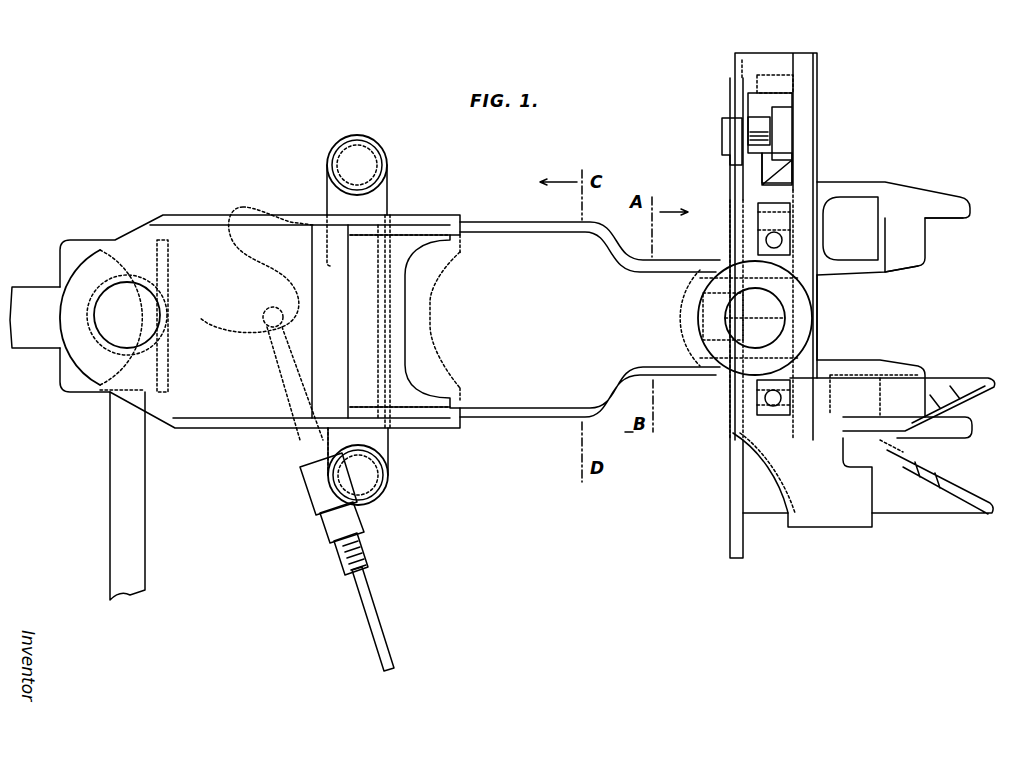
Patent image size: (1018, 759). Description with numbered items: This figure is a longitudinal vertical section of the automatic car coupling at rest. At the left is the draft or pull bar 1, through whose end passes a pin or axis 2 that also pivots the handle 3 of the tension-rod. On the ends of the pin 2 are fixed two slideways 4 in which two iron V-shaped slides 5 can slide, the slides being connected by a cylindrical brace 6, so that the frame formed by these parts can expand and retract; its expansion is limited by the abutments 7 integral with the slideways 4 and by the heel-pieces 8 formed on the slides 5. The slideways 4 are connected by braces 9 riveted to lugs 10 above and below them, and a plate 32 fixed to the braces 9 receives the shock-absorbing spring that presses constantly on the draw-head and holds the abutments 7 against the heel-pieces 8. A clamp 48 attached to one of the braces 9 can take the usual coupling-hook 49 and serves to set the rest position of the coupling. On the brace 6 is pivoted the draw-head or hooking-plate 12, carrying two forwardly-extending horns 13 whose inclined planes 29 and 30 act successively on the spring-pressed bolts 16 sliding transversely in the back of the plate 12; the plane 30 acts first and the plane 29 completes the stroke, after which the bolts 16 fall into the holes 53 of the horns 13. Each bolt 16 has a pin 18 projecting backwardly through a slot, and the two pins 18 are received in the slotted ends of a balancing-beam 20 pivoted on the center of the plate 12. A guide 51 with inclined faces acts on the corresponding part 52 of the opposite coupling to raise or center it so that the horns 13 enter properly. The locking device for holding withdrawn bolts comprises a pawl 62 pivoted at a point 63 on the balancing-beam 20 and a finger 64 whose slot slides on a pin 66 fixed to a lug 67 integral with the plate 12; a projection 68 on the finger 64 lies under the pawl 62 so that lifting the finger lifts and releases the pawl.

The draft or pull bar 1 is at (35, 317).
The pin or axis 2 is at (127, 315).
The handle of the tension-rod 3 is at (127, 496).
The slideways 4 is at (199, 208).
The V-shaped slides 5 is at (523, 222).
The cylindrical brace 6 is at (746, 318).
The abutments 7 is at (357, 321).
The heel-pieces 8 is at (321, 321).
The braces 9 is at (357, 320).
The lugs 10 is at (391, 163).
The draw-head or hooking-plate 12 is at (824, 296).
The horns or projections 13 is at (893, 297).
The bolts 16 is at (790, 242).
The pin of bolt 18 is at (735, 230).
The balancing-beam 20 is at (725, 190).
The inclined plane of horn 29 is at (901, 256).
The inclined plane of horn 30 is at (907, 319).
The plate 32 is at (394, 355).
The clamp 48 is at (300, 449).
The coupling-hook 49 is at (256, 206).
The guide 51 is at (863, 480).
The corresponding part 52 is at (969, 379).
The holes of horns 53 is at (850, 228).
The catch or pawl 62 is at (716, 145).
The pivot point of pawl 63 is at (741, 129).
The finger 64 is at (801, 135).
The pin 66 is at (755, 79).
The lug 67 is at (798, 55).
The projection or heel 68 is at (799, 179).